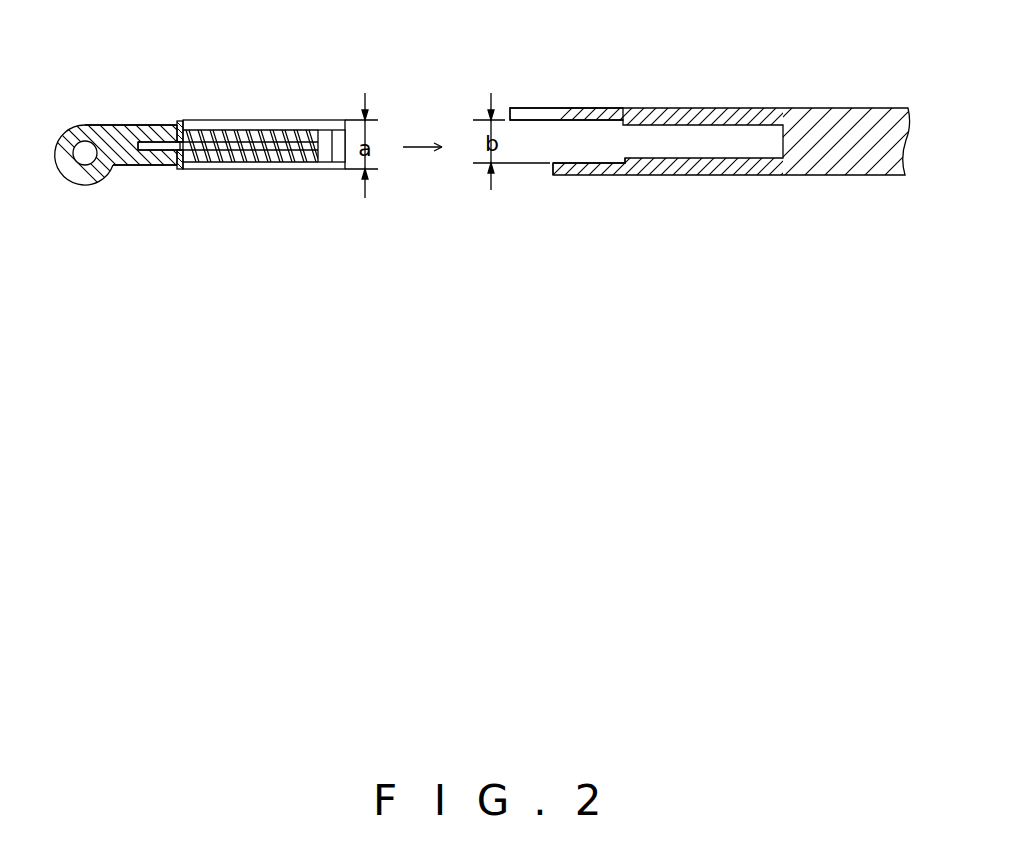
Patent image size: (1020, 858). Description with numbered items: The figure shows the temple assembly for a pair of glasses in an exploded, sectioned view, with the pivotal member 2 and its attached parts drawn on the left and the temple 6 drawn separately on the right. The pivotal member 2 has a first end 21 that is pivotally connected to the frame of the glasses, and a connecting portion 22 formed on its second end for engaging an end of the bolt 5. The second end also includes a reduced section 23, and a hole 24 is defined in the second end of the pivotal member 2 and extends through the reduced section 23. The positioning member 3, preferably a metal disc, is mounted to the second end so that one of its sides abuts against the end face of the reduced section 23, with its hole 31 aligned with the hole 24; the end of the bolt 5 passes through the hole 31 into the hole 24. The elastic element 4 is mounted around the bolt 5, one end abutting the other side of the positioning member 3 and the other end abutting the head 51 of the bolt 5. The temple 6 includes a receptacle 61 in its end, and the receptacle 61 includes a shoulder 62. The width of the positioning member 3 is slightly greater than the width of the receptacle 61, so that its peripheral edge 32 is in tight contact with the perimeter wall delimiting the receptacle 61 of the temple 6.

The pivotal member 2 is at (93, 122).
The first end 21 is at (77, 186).
The connecting portion 22 is at (130, 124).
The reduced section 23 is at (177, 166).
The hole 24 is at (140, 165).
The positioning member 3 is at (186, 121).
The hole 31 is at (170, 163).
The peripheral edge 32 is at (180, 122).
The elastic element 4 is at (245, 133).
The bolt 5 is at (267, 147).
The head 51 is at (325, 130).
The temple 6 is at (770, 106).
The receptacle 61 is at (611, 138).
The shoulder 62 is at (633, 110).